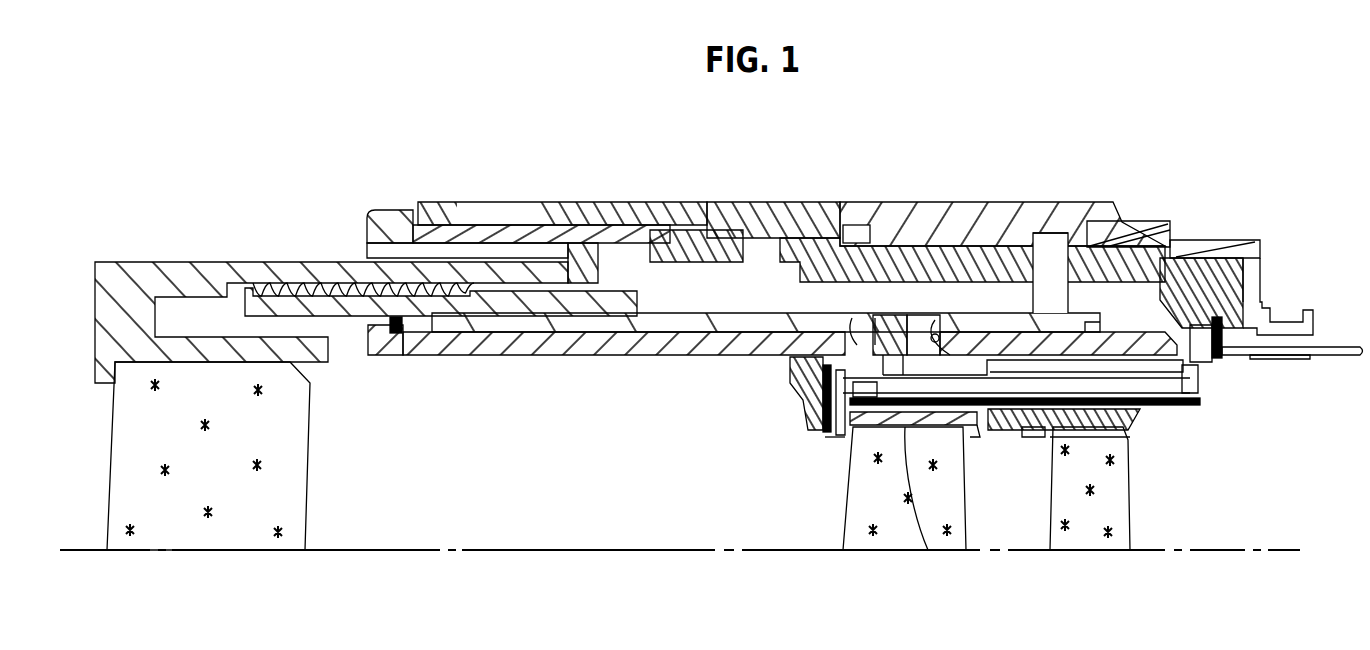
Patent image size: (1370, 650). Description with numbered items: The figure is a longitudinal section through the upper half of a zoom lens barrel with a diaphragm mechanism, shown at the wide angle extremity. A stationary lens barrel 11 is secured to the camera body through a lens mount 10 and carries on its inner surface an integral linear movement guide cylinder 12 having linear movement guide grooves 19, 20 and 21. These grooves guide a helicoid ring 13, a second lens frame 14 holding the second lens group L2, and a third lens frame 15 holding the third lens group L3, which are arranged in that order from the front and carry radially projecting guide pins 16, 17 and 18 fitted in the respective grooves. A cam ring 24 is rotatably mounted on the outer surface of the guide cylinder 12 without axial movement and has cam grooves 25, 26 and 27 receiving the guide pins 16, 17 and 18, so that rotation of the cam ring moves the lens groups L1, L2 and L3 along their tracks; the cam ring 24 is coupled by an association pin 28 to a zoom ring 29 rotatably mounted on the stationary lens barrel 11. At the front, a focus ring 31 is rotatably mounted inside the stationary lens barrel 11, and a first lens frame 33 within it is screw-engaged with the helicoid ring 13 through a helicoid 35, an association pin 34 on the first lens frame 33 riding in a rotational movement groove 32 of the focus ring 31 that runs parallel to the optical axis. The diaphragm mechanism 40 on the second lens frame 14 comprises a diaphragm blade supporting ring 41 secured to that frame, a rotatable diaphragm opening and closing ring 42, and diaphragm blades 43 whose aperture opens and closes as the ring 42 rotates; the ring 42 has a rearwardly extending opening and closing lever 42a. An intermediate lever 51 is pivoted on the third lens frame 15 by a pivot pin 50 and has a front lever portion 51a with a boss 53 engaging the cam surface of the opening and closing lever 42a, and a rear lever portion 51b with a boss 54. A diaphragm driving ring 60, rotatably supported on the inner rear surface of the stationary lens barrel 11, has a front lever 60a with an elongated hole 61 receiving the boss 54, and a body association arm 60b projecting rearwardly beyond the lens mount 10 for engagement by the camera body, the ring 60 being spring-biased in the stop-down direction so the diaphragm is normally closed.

The lens mount 10 is at (1262, 275).
The stationary lens barrel 11 is at (815, 218).
The linear movement guide cylinder 12 is at (607, 352).
The helicoid ring 13 is at (345, 305).
The second lens frame 14 is at (841, 436).
The third lens frame 15 is at (1110, 432).
The guide pin 16 is at (413, 347).
The guide pin 17 is at (857, 340).
The guide pin 18 is at (975, 330).
The linear movement guide groove 19 is at (428, 337).
The linear movement guide groove 20 is at (890, 322).
The linear movement guide groove 21 is at (985, 325).
The cam ring 24 is at (767, 322).
The cam groove 25 is at (437, 337).
The cam groove 26 is at (878, 340).
The cam groove 27 is at (937, 334).
The association pin 28 is at (1058, 255).
The zoom ring 29 is at (1040, 230).
The focus ring 31 is at (398, 232).
The rotational movement groove 32 is at (385, 245).
The first lens frame 33 is at (208, 275).
The association pin 34 is at (588, 258).
The helicoid 35 is at (335, 298).
The diaphragm mechanism 40 is at (774, 445).
The diaphragm blade supporting ring 41 is at (790, 372).
The diaphragm opening and closing ring 42 is at (832, 445).
The opening and closing lever 42a is at (1150, 398).
The diaphragm blade 43 is at (830, 440).
The pivot pin 50 is at (1030, 437).
The intermediate lever 51 is at (1081, 495).
The front lever portion 51a is at (928, 552).
The rear lever portion 51b is at (1200, 398).
The boss 53 is at (823, 397).
The boss 54 is at (1200, 385).
The diaphragm driving ring 60 is at (1222, 355).
The front lever 60a is at (1108, 310).
The elongated hole 61 is at (1068, 325).
The body association arm 60b is at (1335, 345).
The first lens group L1 is at (232, 552).
The second lens group L2 is at (878, 552).
The third lens group L3 is at (1095, 552).